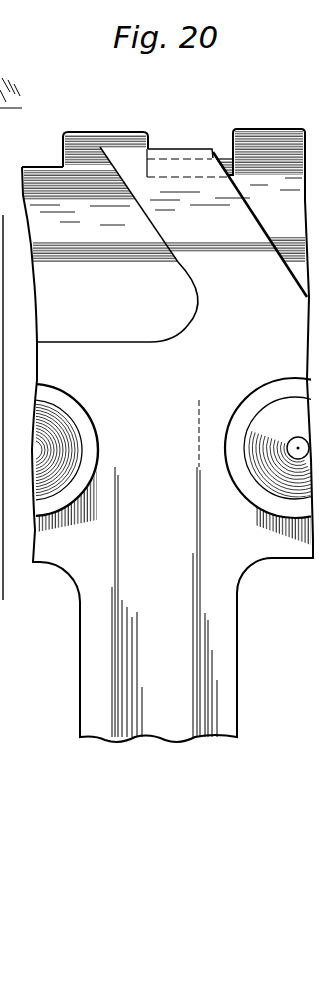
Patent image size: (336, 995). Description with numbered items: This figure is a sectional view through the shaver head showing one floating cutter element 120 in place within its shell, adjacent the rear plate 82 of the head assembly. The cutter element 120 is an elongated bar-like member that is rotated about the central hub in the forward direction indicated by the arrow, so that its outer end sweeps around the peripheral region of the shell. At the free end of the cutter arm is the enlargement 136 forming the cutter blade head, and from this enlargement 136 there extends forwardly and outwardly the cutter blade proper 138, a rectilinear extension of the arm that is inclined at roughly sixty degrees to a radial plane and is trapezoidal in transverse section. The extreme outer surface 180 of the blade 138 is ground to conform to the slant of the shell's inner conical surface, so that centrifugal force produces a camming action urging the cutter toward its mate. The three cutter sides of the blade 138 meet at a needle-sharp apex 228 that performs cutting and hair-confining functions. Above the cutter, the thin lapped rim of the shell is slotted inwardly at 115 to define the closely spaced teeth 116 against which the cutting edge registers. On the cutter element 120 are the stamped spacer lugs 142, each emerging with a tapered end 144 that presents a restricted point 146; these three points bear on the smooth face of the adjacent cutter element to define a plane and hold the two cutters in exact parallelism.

The rear plate 82 is at (3, 369).
The slots 115 is at (209, 148).
The teeth 116 is at (100, 131).
The cutter element 120 is at (53, 342).
The enlargement 136 is at (111, 365).
The cutter blade proper 138 is at (200, 213).
The spacer lugs 142 is at (68, 407).
The tapered end 144 is at (57, 457).
The restricted point 146 is at (36, 447).
The outer surface 180 is at (160, 148).
The apex 228 is at (98, 148).